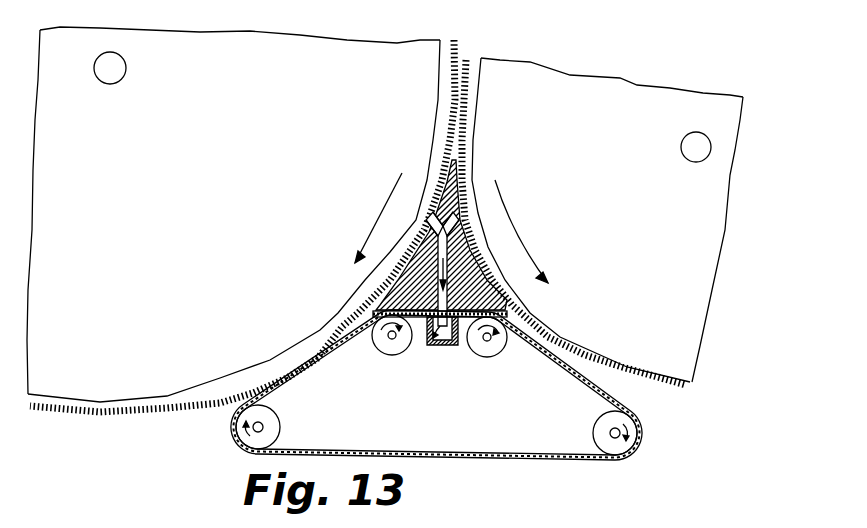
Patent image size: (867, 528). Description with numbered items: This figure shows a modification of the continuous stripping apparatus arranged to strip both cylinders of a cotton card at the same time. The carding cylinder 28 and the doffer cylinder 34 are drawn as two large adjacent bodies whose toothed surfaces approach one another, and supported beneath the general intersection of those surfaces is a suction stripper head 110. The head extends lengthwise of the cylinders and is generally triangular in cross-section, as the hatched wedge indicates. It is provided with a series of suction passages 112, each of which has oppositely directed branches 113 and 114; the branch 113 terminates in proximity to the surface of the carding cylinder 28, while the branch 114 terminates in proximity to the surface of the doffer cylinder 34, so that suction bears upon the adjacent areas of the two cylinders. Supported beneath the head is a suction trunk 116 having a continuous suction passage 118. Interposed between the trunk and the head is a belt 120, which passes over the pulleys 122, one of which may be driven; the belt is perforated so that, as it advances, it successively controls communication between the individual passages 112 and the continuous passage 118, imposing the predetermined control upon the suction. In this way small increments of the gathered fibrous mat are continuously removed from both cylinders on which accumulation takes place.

The carding cylinder 28 is at (241, 219).
The doffer cylinder 34 is at (602, 221).
The suction stripper head 110 is at (405, 288).
The suction passages 112 is at (463, 347).
The branch 113 is at (423, 225).
The branch 114 is at (459, 226).
The suction trunk 116 is at (430, 346).
The continuous suction passage 118 is at (427, 318).
The belt 120 is at (457, 450).
The pulleys 122 is at (373, 348).